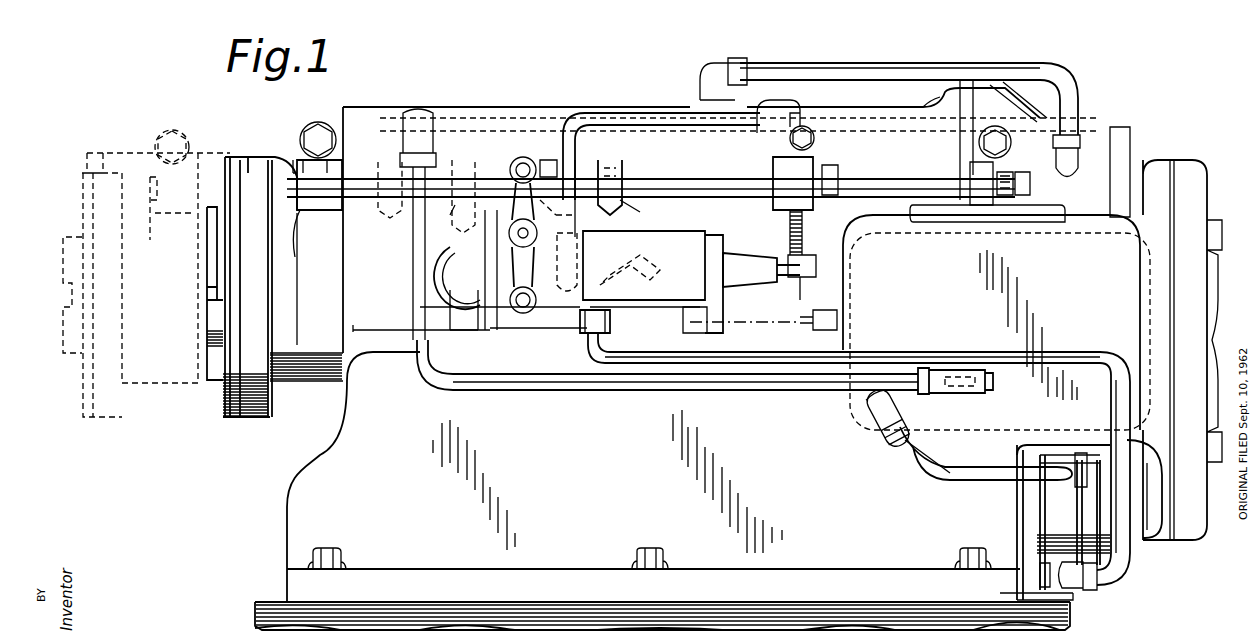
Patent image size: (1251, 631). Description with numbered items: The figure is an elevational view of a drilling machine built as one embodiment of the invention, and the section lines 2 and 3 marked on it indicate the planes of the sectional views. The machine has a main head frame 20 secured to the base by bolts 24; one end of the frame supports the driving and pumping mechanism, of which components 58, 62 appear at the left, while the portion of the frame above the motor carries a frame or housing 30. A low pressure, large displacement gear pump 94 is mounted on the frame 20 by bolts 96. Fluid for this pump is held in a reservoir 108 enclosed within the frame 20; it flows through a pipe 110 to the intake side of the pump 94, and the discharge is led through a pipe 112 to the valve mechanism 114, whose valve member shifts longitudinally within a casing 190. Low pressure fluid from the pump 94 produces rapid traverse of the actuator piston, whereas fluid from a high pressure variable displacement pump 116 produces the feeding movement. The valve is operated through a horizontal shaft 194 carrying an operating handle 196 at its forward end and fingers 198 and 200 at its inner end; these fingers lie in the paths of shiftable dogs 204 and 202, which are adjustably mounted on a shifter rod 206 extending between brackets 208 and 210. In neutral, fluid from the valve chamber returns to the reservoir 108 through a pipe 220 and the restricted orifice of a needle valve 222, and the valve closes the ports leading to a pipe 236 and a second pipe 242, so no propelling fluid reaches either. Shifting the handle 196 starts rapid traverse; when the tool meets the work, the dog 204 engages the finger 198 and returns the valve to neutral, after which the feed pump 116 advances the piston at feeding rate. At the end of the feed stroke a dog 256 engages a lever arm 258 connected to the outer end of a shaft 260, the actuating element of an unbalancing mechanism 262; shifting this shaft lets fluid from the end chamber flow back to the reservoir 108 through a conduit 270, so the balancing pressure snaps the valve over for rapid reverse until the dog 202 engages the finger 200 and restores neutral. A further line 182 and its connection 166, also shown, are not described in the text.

The section line 2- 2 is at (134, 172).
The section line 3- 3 is at (375, 122).
The main head frame 20 is at (708, 341).
The bolts 24 is at (322, 553).
The frame or housing 30 is at (527, 105).
The flywheel hub 58 is at (217, 347).
The pulley 62 is at (133, 395).
The low pressure large displacement pumping mechanism 94 is at (1065, 507).
The bolts 96 is at (1070, 605).
The reservoir 108 is at (1105, 240).
The pipe 110 is at (915, 467).
The pipe 112 is at (627, 364).
The valve mechanism 114 is at (566, 320).
The high pressure variable displacement pump 116 is at (925, 98).
The coolant fitting 166 is at (1083, 117).
The coolant pipe 182 is at (985, 64).
The casing 190 is at (672, 237).
The horizontal shaft 194 is at (514, 240).
The operating handle 196 is at (528, 160).
The finger 198 is at (505, 225).
The finger 200 is at (560, 200).
The shiftable dog 202 is at (553, 183).
The shiftable dog 204 is at (650, 213).
The shifter rod 206 is at (357, 180).
The bracket 208 is at (310, 212).
The bracket 210 is at (770, 163).
The pipe 220 is at (743, 392).
The needle valve 222 is at (970, 393).
The pipe 236 is at (663, 100).
The second pipe 242 is at (423, 258).
The dog 256 is at (832, 175).
The lever arm 258 is at (815, 232).
The shaft 260 is at (820, 285).
The unbalancing mechanism 262 is at (767, 240).
The conduit 270 is at (838, 318).